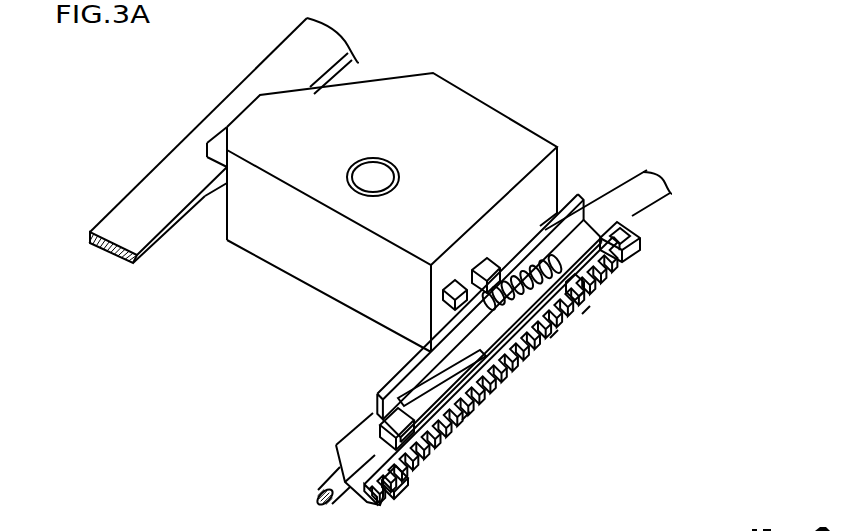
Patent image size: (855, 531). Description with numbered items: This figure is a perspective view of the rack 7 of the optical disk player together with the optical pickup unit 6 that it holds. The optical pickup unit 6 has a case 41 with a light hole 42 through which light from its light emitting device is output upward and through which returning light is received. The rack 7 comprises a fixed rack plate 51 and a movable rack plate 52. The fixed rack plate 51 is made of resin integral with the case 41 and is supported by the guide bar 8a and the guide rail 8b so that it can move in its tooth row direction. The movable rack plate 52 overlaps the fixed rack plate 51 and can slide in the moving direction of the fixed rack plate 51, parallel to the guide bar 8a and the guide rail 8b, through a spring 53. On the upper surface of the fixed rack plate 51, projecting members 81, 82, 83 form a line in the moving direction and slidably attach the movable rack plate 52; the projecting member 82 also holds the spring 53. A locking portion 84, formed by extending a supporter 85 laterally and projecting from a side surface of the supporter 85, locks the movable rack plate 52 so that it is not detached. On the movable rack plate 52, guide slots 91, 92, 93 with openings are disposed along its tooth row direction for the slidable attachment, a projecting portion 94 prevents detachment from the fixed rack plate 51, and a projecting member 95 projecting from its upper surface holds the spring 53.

The optical pickup unit 6 is at (410, 188).
The rack 7 is at (520, 372).
The guide bar 8a is at (633, 207).
The guide rail 8b is at (177, 182).
The case 41 is at (308, 262).
The light hole 42 is at (373, 177).
The fixed rack plate 51 is at (450, 440).
The movable rack plate 52 is at (365, 448).
The spring 53 is at (629, 335).
The projecting member 81 is at (407, 470).
The projecting member 82 is at (482, 397).
The projecting member 83 is at (563, 253).
The locking portion 84 is at (497, 253).
The supporter 85 is at (455, 297).
The guide slot 91 is at (467, 418).
The guide slot 92 is at (555, 335).
The guide slot 93 is at (607, 238).
The projecting portion 94 is at (448, 292).
The projecting member 95 is at (582, 283).